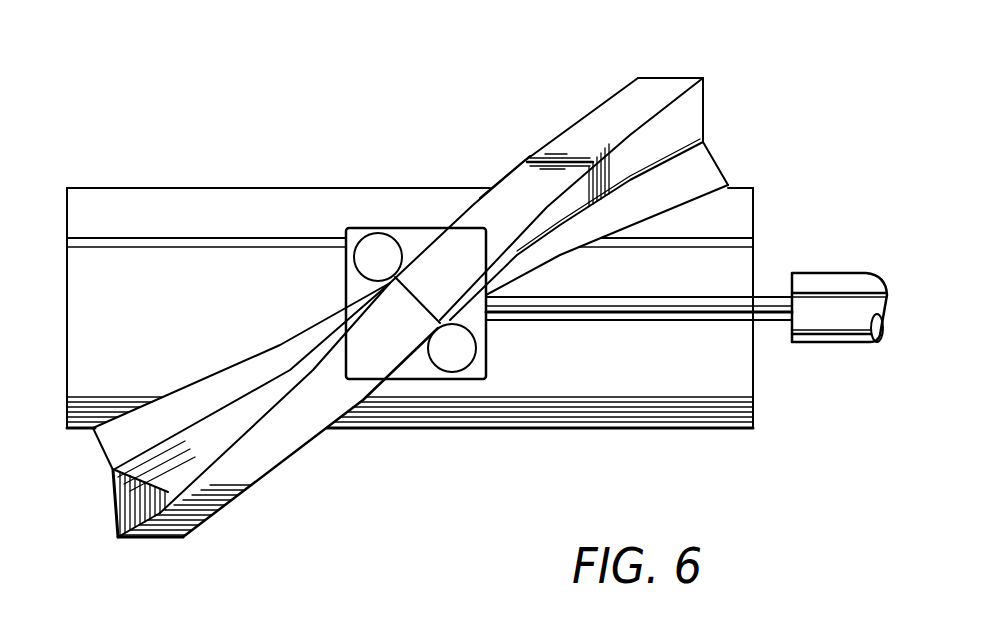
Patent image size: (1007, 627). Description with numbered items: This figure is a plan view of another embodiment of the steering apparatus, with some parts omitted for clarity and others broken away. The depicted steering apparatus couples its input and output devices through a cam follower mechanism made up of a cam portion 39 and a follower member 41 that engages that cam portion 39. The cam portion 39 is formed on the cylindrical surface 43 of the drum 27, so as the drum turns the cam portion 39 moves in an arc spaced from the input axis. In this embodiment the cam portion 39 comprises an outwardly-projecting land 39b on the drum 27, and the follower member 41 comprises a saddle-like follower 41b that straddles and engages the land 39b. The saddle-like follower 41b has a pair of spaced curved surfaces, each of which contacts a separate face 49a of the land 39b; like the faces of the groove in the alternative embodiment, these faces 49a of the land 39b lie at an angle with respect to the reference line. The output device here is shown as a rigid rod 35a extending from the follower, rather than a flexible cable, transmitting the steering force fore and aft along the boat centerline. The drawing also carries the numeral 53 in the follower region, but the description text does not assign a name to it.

The drum 27 is at (630, 427).
The rigid rod 35a is at (762, 323).
The cam portion 39 is at (575, 100).
The outwardly-projecting land 39b is at (520, 190).
The follower member 41 is at (333, 215).
The saddle-like follower 41b is at (410, 237).
The cylindrical surface 43 is at (575, 377).
The face of the land 49a is at (200, 460).
The rollers 53 is at (398, 278).